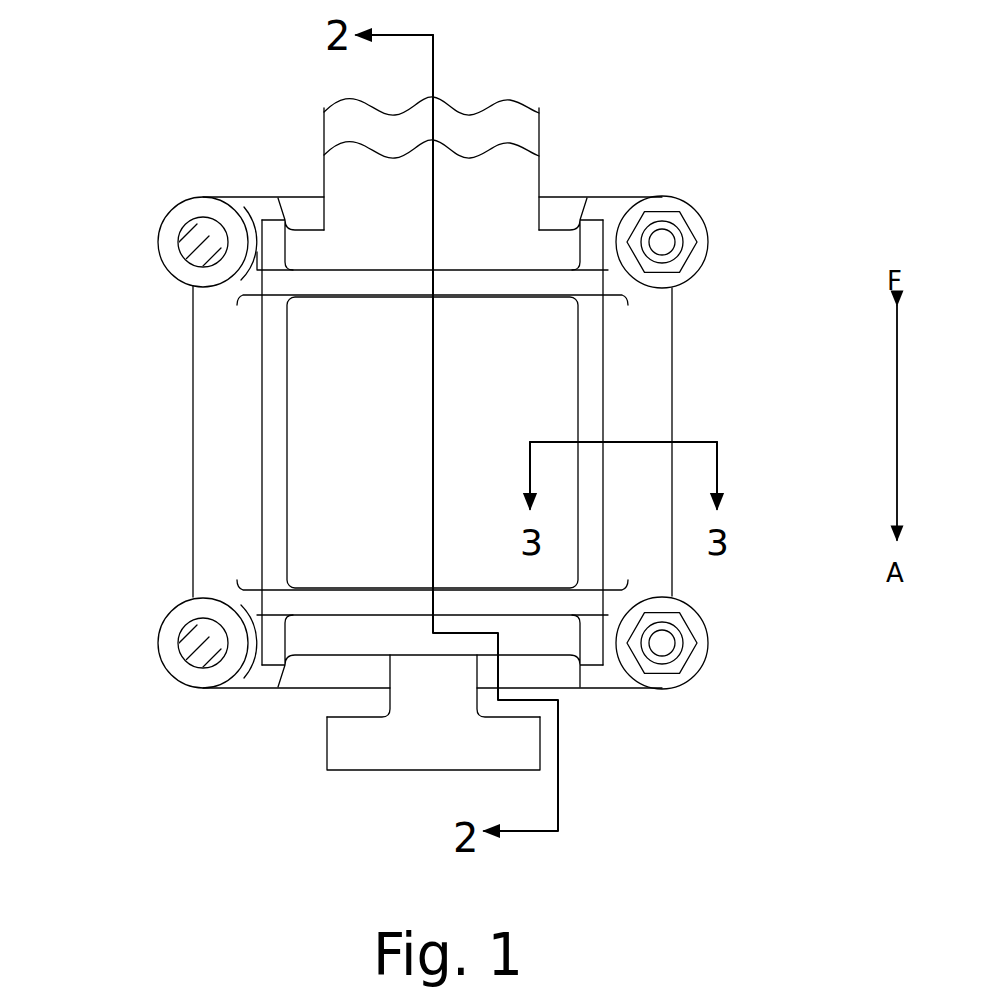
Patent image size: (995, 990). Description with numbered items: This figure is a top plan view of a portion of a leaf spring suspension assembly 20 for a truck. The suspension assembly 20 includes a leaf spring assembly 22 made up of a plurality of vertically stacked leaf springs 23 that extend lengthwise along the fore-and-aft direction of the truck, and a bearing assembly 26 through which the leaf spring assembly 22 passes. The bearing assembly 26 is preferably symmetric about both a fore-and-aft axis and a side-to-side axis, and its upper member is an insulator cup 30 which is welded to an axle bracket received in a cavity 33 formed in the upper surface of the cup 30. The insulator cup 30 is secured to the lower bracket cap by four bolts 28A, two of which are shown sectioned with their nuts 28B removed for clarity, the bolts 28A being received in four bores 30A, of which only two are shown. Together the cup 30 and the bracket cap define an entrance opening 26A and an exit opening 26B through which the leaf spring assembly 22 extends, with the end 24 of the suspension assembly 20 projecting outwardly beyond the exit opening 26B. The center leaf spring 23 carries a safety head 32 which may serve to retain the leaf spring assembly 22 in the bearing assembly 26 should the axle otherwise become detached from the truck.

The leaf spring suspension assembly 20 is at (255, 166).
The leaf spring assembly 22 is at (548, 112).
The leaf springs 23 is at (518, 182).
The end 24 is at (322, 742).
The bearing assembly 26 is at (192, 422).
The entrance opening 26A is at (305, 170).
The exit opening 26B is at (575, 692).
The bolts 28A is at (195, 225).
The nuts 28B is at (690, 222).
The insulator cup 30 is at (647, 345).
The bores 30A is at (200, 223).
The safety head 32 is at (357, 752).
The cavity 33 is at (323, 347).